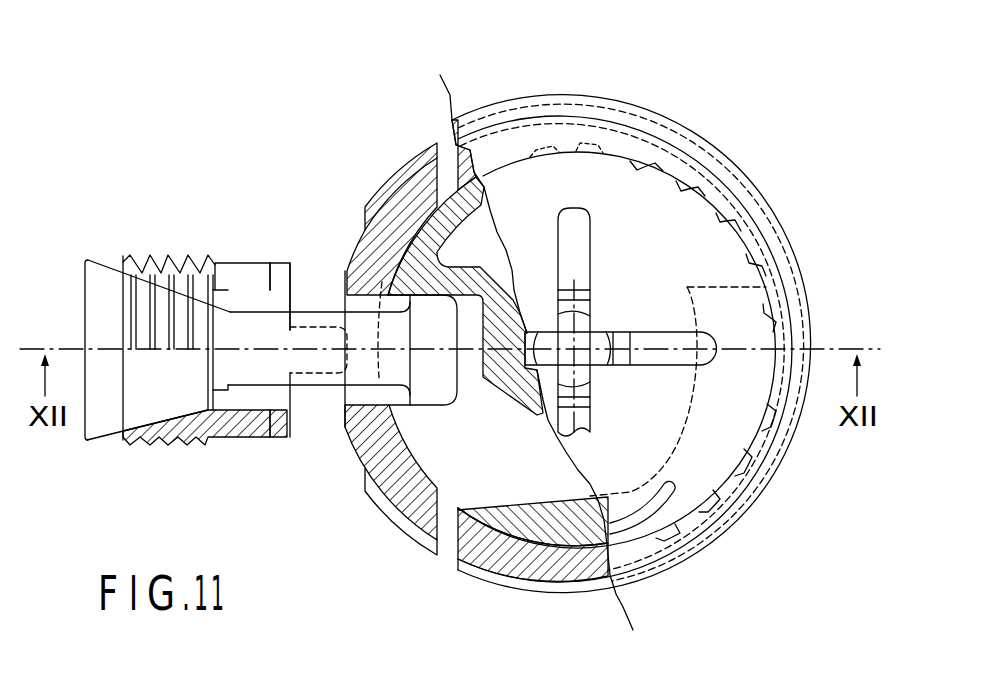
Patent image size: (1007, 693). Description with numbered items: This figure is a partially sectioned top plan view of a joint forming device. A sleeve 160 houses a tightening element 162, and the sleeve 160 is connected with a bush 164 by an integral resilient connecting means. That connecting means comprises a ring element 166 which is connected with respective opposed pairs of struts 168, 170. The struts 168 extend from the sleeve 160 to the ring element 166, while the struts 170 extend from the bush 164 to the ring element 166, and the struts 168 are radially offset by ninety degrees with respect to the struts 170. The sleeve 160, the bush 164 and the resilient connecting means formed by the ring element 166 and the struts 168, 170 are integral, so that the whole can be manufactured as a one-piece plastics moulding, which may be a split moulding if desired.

The sleeve 160 is at (752, 158).
The tightening element 162 is at (538, 480).
The bush 164 is at (160, 246).
The ring element 166 is at (285, 270).
The struts 168 is at (323, 347).
The struts 170 is at (237, 270).